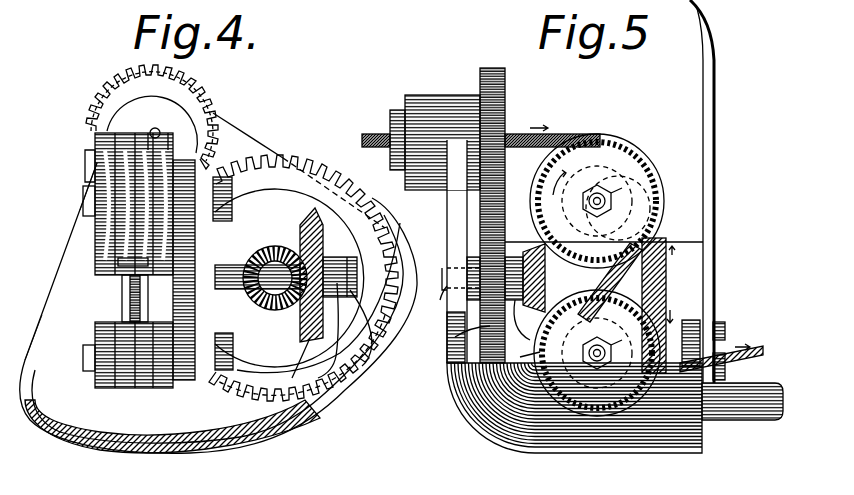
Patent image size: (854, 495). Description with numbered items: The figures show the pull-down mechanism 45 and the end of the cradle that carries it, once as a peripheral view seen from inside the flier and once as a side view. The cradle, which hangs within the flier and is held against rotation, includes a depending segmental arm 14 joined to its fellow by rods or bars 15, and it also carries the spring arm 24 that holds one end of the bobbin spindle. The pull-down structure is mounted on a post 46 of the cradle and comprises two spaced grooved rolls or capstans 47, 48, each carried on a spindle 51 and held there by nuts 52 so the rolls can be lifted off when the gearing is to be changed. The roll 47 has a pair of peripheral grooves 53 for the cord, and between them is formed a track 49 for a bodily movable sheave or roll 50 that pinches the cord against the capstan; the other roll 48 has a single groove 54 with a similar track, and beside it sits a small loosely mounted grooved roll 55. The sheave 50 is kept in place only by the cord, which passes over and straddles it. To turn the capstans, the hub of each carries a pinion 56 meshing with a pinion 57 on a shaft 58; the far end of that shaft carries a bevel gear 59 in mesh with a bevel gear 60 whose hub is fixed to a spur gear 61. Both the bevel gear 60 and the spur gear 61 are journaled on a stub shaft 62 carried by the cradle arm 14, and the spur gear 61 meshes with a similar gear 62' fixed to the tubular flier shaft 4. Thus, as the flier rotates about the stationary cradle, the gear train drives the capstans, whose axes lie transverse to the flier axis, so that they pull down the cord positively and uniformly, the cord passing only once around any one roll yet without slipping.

In FIG. 5, the tubular shaft 4 is at (402, 108).
In FIG. 4, the cradle arm 14 is at (255, 142).
In FIG. 5, the cradle arm 14 is at (465, 234).
In FIG. 5, the rods or bars 15 is at (750, 414).
In FIG. 5, the spring arm 24 is at (716, 273).
In FIG. 4, the pull-down mechanism 45 is at (61, 261).
In FIG. 5, the pull-down mechanism 45 is at (502, 215).
In FIG. 4, the post 46 is at (231, 240).
In FIG. 5, the post 46 is at (597, 201).
In FIG. 4, the grooved roll or capstan 47 is at (97, 166).
In FIG. 5, the grooved roll or capstan 47 is at (620, 182).
In FIG. 4, the grooved roll or capstan 48 is at (140, 407).
In FIG. 5, the grooved roll or capstan 48 is at (655, 335).
In FIG. 4, the track 49 is at (153, 146).
In FIG. 4, the sheave or roll 50 is at (122, 290).
In FIG. 5, the sheave or roll 50 is at (672, 255).
In FIG. 5, the spindle 51 is at (631, 271).
In FIG. 4, the nuts 52 is at (83, 200).
In FIG. 4, the peripheral grooves 53 is at (118, 264).
In FIG. 4, the groove 54 is at (210, 418).
In FIG. 4, the grooved roll 55 is at (110, 382).
In FIG. 5, the grooved roll 55 is at (553, 353).
In FIG. 4, the pinion 56 is at (221, 173).
In FIG. 4, the pinion 57 is at (245, 264).
In FIG. 4, the shaft 58 is at (273, 253).
In FIG. 5, the shaft 58 is at (570, 298).
In FIG. 4, the bevel gear 59 is at (333, 256).
In FIG. 5, the bevel gear 59 is at (568, 248).
In FIG. 4, the bevel gear 60 is at (318, 336).
In FIG. 5, the bevel gear 60 is at (522, 321).
In FIG. 4, the spur gear 61 is at (381, 226).
In FIG. 5, the spur gear 61 is at (455, 337).
In FIG. 5, the stub shaft 62 is at (432, 307).
In FIG. 4, the gear 62' is at (170, 117).
In FIG. 5, the gear 62' is at (519, 213).